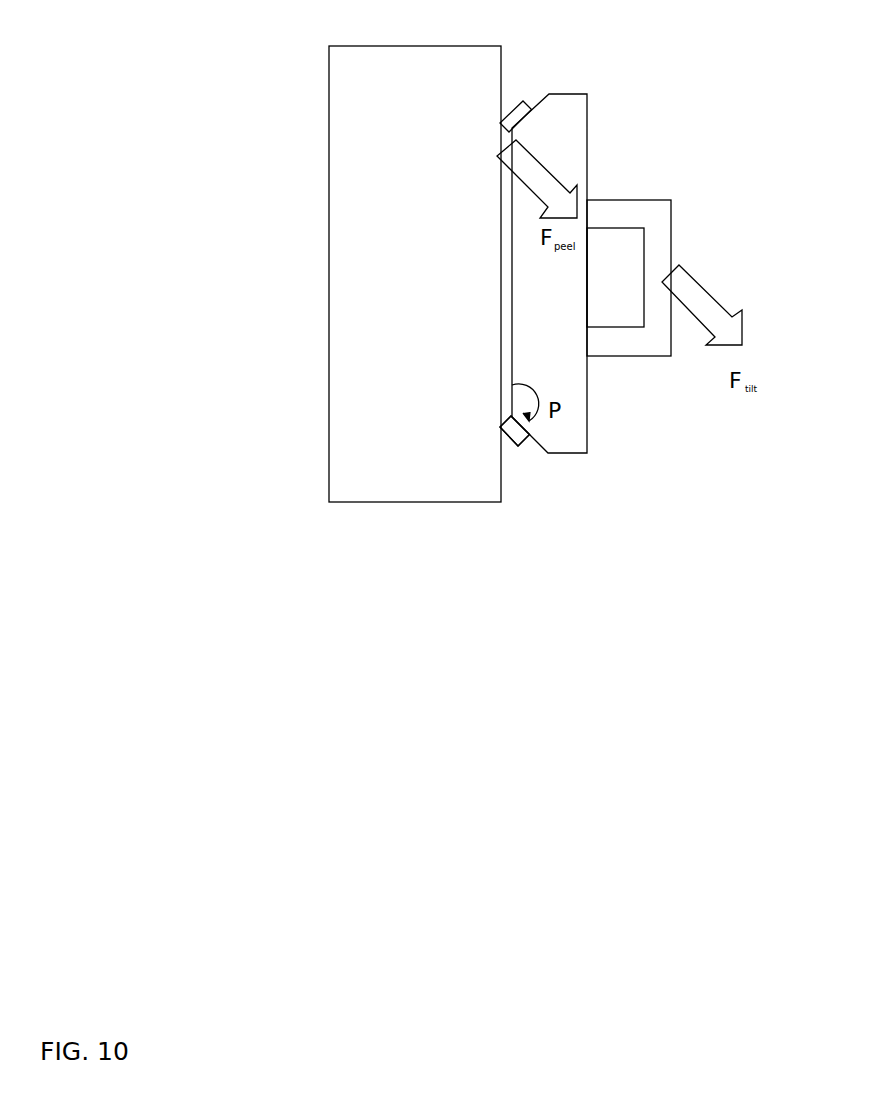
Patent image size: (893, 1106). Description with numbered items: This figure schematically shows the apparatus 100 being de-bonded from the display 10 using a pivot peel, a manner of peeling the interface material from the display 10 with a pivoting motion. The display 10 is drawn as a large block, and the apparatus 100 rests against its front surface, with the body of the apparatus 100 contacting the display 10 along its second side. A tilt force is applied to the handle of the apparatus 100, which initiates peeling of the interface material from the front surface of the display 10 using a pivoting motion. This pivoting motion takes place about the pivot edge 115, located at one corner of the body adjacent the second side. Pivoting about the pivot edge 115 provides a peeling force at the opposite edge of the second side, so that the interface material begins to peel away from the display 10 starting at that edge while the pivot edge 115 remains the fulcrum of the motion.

The display 10 is at (415, 274).
The apparatus 100 is at (587, 144).
The pivot edge 115 is at (513, 415).